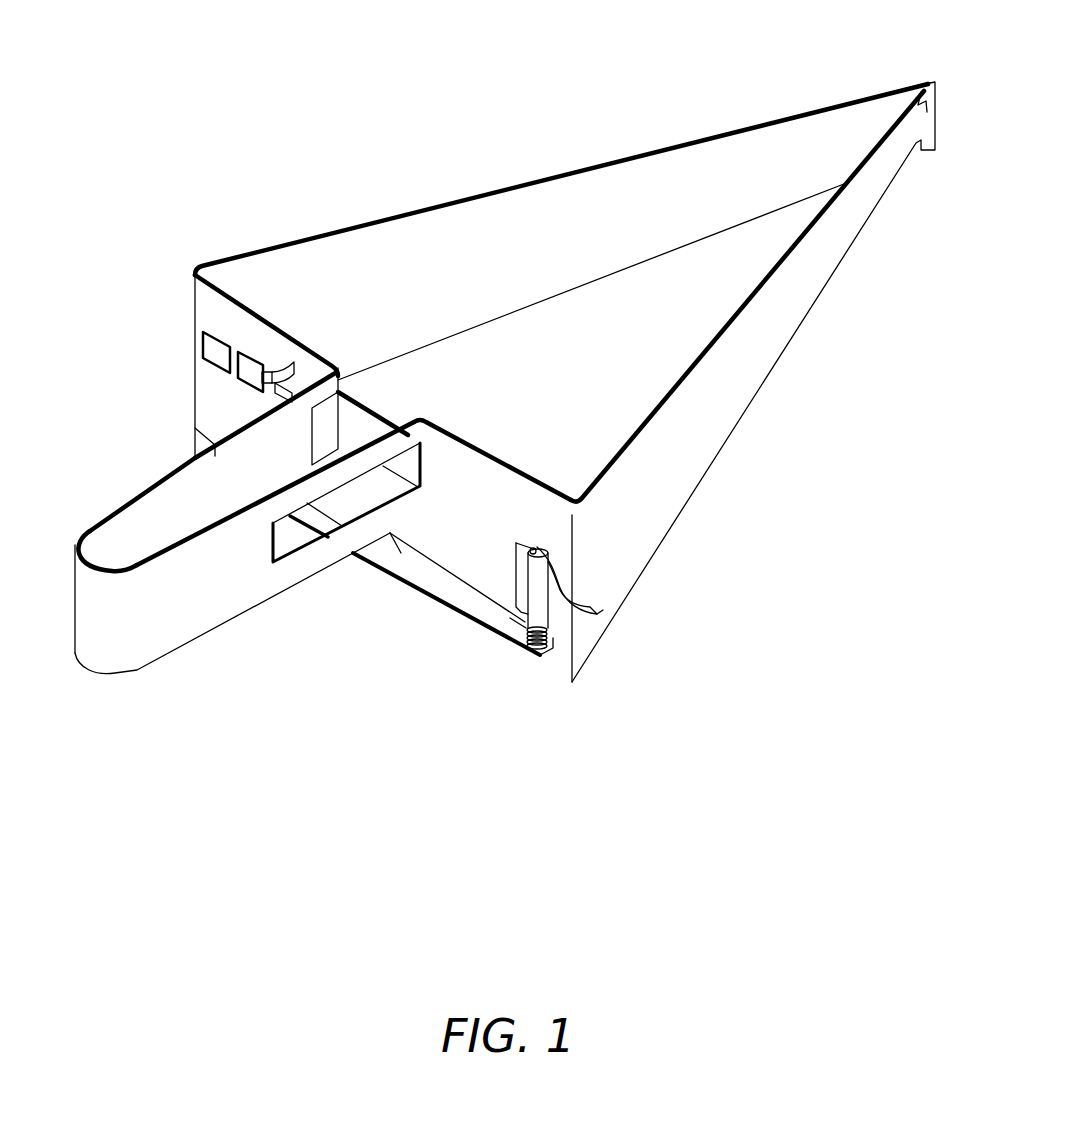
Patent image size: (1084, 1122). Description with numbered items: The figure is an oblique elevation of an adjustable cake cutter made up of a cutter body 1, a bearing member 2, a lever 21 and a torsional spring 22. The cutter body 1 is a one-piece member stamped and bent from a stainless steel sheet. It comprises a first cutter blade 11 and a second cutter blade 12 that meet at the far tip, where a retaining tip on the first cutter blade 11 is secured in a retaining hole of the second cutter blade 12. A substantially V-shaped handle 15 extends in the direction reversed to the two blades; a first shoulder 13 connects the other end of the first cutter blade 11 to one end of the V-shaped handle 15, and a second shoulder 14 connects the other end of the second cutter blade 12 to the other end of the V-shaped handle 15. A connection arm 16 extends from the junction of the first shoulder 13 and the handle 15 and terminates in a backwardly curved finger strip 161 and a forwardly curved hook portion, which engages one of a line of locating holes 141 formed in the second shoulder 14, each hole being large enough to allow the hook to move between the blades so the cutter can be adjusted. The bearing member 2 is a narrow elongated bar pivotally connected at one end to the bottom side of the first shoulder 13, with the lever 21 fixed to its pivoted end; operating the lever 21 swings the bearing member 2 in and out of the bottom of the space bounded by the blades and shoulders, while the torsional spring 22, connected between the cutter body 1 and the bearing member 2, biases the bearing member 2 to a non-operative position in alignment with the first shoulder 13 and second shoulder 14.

The cutter body 1 is at (468, 148).
The bearing member 2 is at (448, 597).
The first cutter blade 11 is at (735, 383).
The second cutter blade 12 is at (423, 238).
The first shoulder 13 is at (488, 506).
The second shoulder 14 is at (203, 311).
The V-shaped handle 15 is at (228, 606).
The connection arm 16 is at (357, 424).
The lever 21 is at (628, 602).
The torsional spring 22 is at (535, 655).
The locating holes 141 is at (217, 358).
The finger strip 161 is at (270, 372).